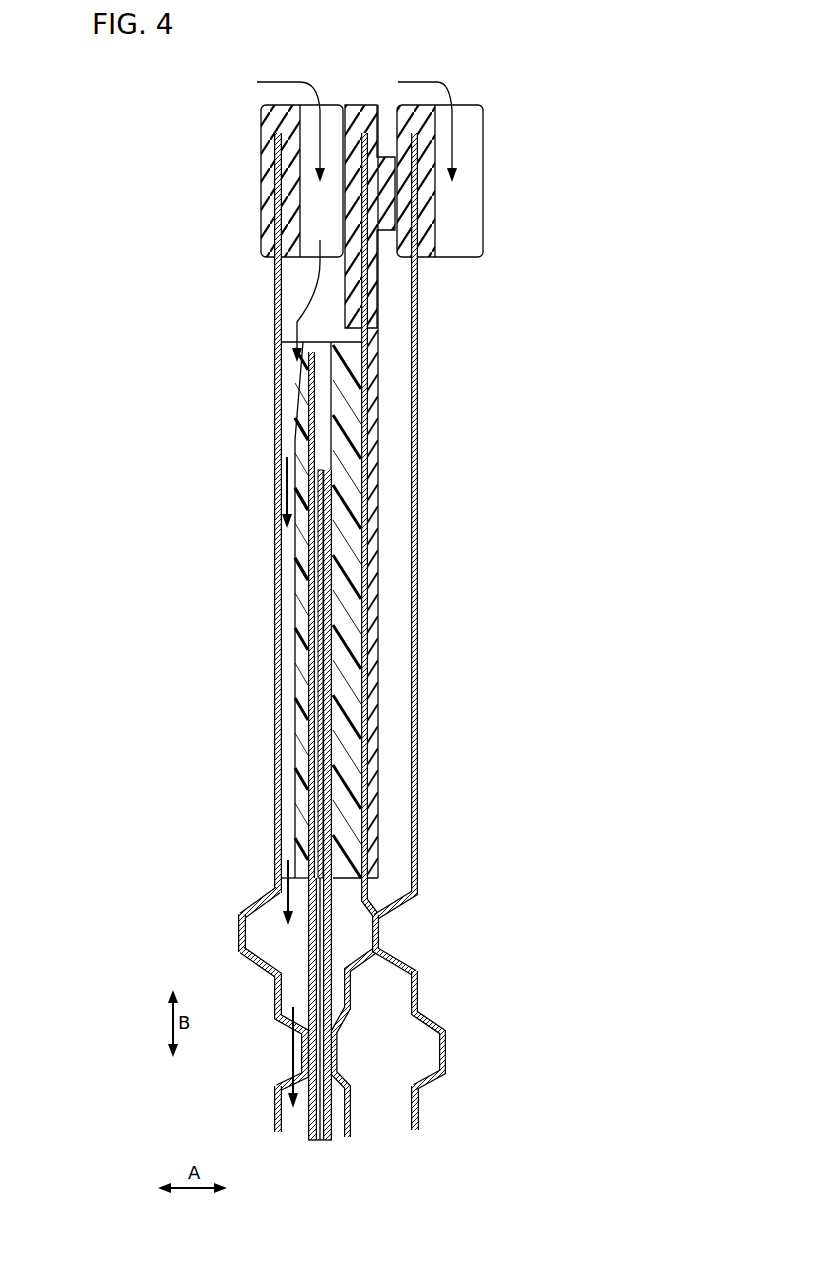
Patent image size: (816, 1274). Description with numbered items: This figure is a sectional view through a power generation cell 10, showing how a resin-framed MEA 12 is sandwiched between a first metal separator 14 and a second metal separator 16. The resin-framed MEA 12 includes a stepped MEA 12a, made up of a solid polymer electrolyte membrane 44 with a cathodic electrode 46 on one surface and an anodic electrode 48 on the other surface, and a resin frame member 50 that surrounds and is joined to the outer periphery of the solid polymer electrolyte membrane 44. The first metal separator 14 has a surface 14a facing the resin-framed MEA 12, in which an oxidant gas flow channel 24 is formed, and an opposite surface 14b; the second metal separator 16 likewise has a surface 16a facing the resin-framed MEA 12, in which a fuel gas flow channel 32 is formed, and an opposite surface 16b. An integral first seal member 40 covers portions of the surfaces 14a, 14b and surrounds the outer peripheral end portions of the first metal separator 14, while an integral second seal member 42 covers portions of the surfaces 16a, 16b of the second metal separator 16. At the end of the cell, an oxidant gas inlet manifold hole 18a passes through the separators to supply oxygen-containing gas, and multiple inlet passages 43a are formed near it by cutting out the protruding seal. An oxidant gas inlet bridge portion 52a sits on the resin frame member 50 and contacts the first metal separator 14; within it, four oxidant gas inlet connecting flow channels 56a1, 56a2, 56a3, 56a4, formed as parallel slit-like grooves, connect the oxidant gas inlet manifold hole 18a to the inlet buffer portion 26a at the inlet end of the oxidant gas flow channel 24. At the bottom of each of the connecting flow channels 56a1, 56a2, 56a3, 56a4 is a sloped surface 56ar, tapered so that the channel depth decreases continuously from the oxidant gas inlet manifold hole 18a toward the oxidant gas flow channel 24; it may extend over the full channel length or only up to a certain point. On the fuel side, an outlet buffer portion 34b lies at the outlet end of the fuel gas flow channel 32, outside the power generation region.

The power generation cell 10 is at (458, 59).
The resin-framed MEA 12 is at (406, 621).
The MEA 12a is at (338, 564).
The first metal separator 14 is at (268, 1097).
The surface of the first metal separator 14a is at (266, 903).
The surface of the first metal separator 14b is at (240, 932).
The second metal separator 16 is at (360, 1121).
The surface of the second metal separator 16a is at (354, 957).
The surface of the second metal separator 16b is at (353, 998).
The oxidant gas inlet manifold hole 18a is at (330, 100).
The oxidant gas flow channel 24 is at (288, 1117).
The inlet buffer portion 26a is at (251, 960).
The fuel gas flow channel 32 is at (337, 1100).
The outlet buffer portion 34b is at (372, 904).
The first seal member 40 is at (268, 131).
The second seal member 42 is at (365, 110).
The inlet passage 43a is at (308, 162).
The solid polymer electrolyte membrane 44 is at (316, 1115).
The cathodic electrode 46 is at (316, 1142).
The anodic electrode 48 is at (326, 1142).
The resin frame member 50 is at (372, 494).
The oxidant gas inlet bridge portion 52a is at (350, 370).
The sloped surface 56ar is at (300, 416).
The oxidant gas inlet connecting flow channel 56a1 is at (291, 605).
The oxidant gas inlet connecting flow channel 56a2 is at (301, 429).
The oxidant gas inlet connecting flow channel 56a3 is at (301, 499).
The oxidant gas inlet connecting flow channel 56a4 is at (301, 569).